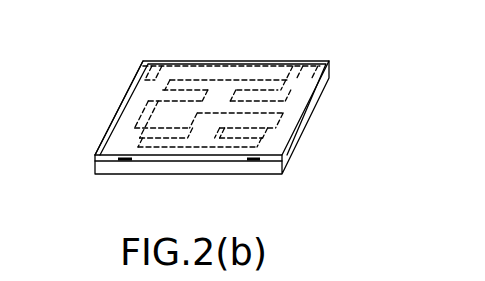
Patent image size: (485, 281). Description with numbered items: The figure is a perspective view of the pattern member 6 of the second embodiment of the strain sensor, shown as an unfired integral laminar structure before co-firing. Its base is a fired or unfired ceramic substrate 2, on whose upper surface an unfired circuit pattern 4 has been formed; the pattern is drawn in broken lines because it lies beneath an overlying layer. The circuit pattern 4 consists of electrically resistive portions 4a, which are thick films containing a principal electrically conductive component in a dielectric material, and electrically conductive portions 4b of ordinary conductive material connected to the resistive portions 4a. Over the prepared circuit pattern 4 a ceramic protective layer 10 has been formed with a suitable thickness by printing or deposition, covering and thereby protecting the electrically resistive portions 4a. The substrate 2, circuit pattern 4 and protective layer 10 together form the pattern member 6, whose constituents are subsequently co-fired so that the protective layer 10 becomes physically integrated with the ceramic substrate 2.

The ceramic substrate 2 is at (246, 170).
The circuit pattern 4 is at (212, 77).
The electrically resistive portions 4a is at (205, 119).
The electrically conductive portions 4b is at (167, 62).
The pattern member 6 is at (96, 125).
The ceramic protective layer 10 is at (170, 162).